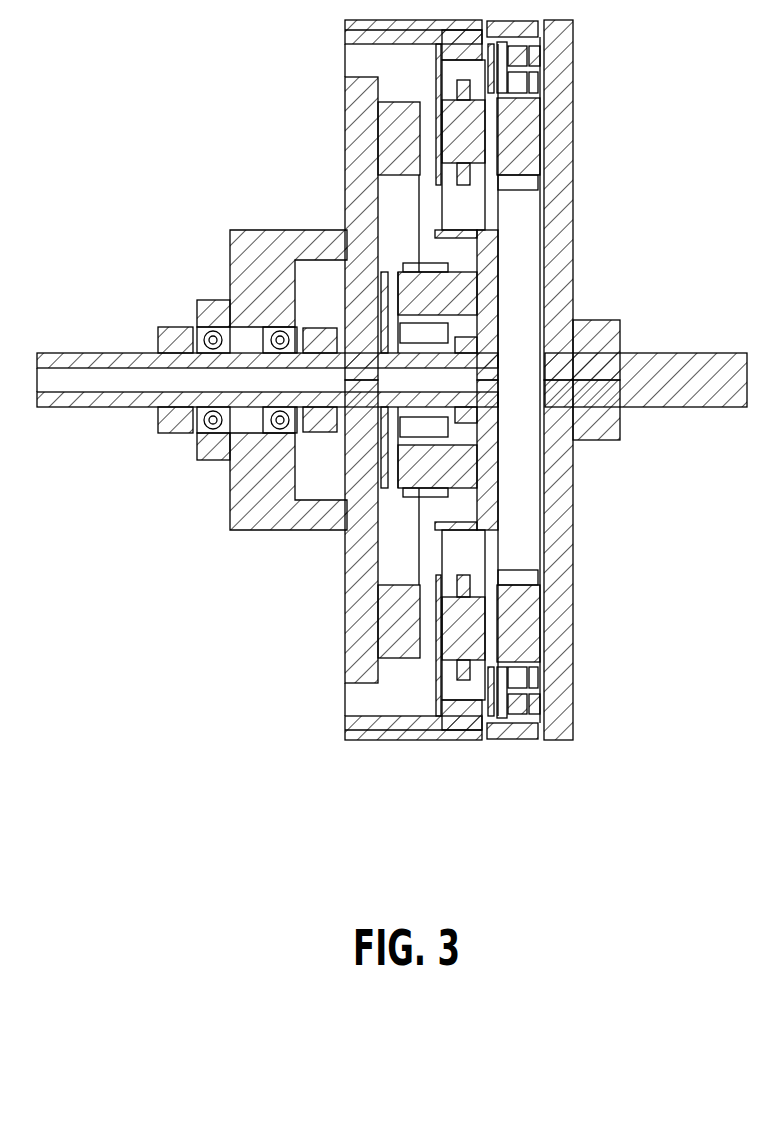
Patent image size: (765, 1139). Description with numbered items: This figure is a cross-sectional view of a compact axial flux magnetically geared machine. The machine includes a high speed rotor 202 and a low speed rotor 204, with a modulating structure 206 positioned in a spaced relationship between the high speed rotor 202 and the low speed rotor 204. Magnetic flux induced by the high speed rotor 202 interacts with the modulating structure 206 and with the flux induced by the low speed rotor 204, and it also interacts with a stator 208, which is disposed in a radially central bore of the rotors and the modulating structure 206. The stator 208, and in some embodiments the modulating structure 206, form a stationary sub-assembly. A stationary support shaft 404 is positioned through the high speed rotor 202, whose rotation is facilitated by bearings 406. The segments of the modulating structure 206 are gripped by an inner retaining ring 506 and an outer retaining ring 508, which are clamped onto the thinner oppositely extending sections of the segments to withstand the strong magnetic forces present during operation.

The high speed rotor 202 is at (347, 573).
The low speed rotor 204 is at (513, 245).
The modulating structure 206 is at (472, 132).
The stator 208 is at (432, 333).
The support shaft 404 is at (73, 403).
The bearings 406 is at (213, 428).
The inner retaining ring 506 is at (472, 68).
The outer retaining ring 508 is at (468, 195).